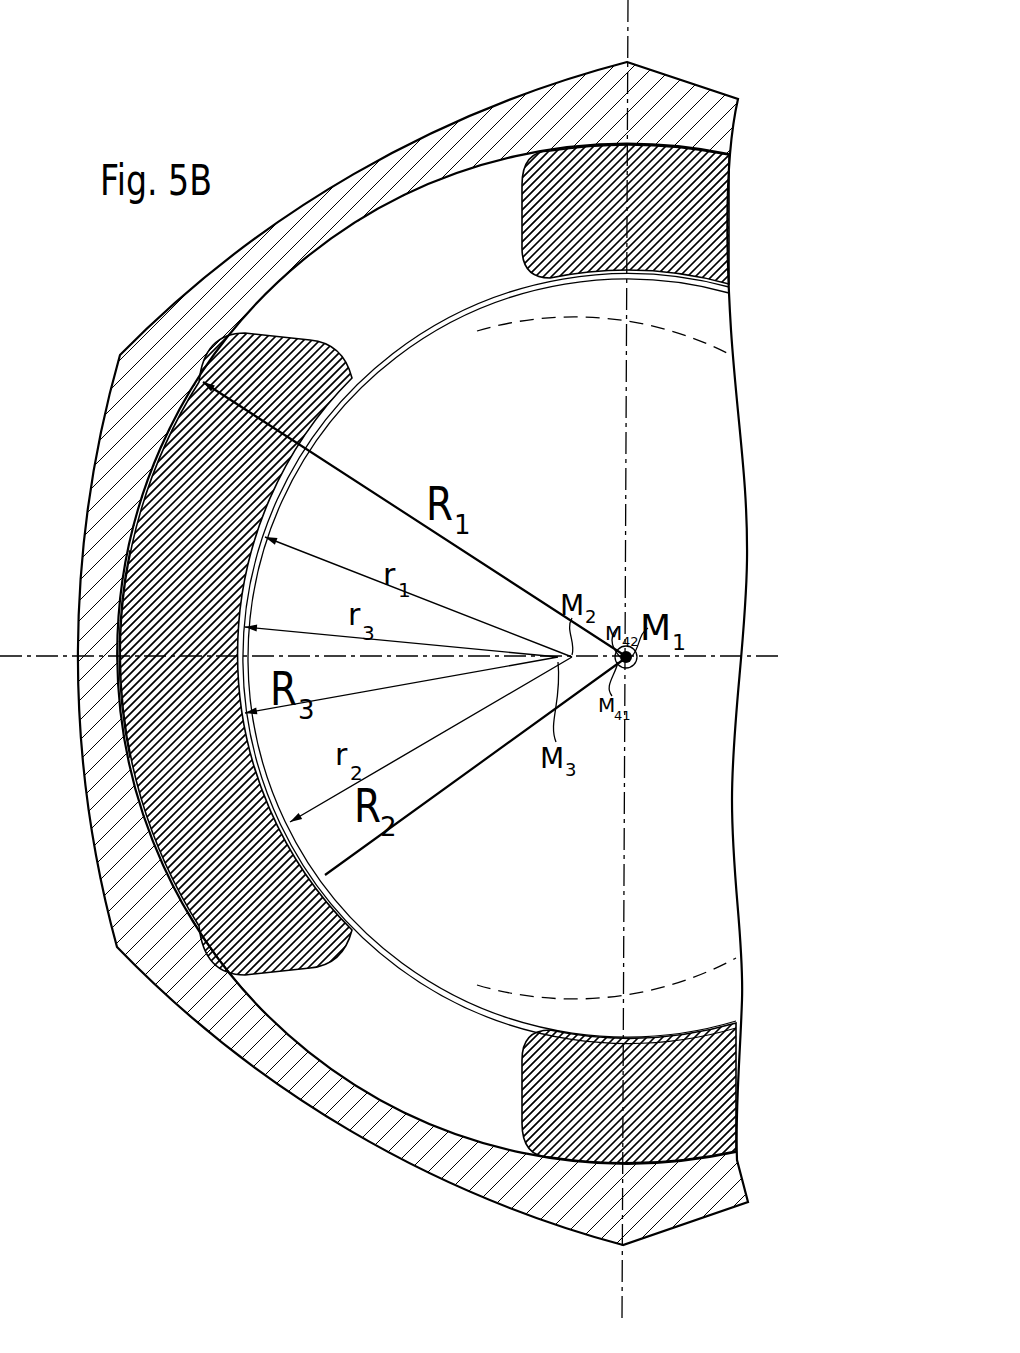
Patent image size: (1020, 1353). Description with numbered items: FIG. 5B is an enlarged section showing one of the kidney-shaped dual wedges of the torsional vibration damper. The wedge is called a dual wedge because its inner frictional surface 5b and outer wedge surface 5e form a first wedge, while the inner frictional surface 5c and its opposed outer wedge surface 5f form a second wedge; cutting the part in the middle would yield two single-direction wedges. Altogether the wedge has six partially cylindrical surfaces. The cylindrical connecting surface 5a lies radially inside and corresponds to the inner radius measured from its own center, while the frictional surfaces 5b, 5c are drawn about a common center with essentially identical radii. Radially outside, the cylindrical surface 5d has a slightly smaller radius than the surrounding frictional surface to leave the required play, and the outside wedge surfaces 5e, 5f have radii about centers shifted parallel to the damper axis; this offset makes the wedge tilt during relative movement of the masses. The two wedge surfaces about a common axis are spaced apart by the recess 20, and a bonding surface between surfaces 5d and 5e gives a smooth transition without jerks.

The recess 20 is at (82, 690).
The cylindrical connecting surface 5a is at (247, 600).
The inner wedge surface 5b is at (333, 423).
The inner wedge surface 5c is at (290, 822).
The cylindrical surface 5d is at (120, 618).
The outer wedge surface 5e is at (203, 382).
The outer wedge surface 5f is at (172, 962).